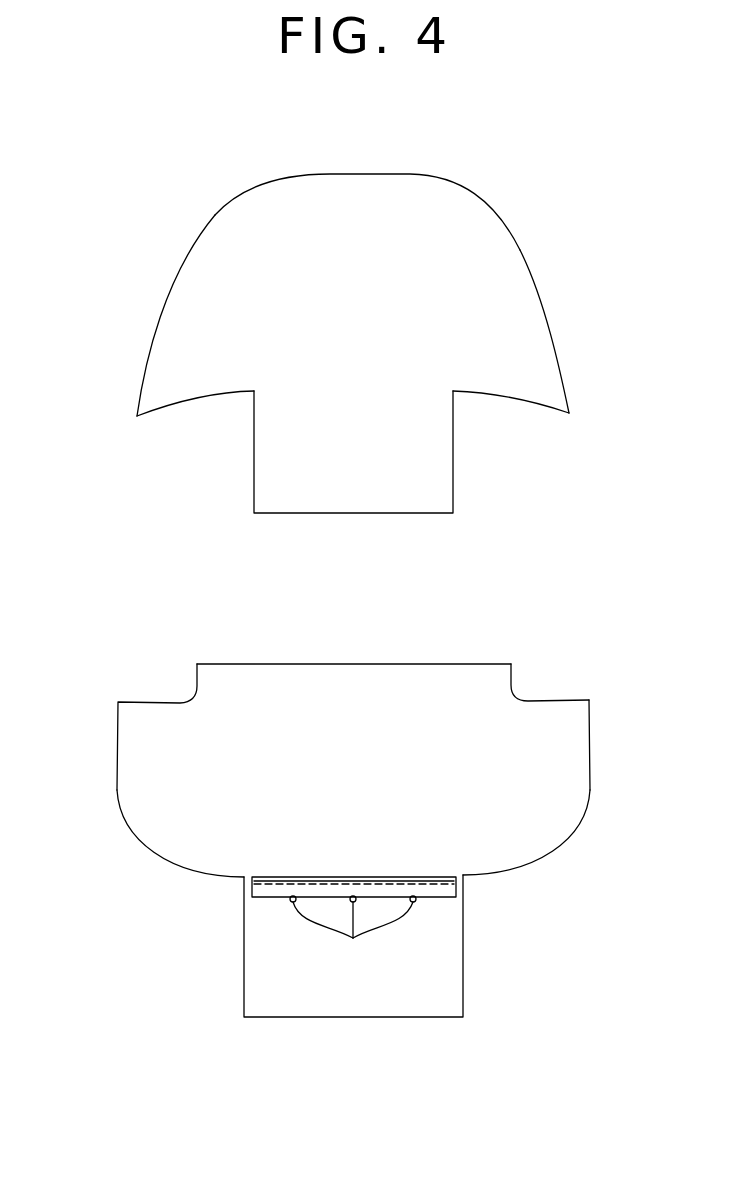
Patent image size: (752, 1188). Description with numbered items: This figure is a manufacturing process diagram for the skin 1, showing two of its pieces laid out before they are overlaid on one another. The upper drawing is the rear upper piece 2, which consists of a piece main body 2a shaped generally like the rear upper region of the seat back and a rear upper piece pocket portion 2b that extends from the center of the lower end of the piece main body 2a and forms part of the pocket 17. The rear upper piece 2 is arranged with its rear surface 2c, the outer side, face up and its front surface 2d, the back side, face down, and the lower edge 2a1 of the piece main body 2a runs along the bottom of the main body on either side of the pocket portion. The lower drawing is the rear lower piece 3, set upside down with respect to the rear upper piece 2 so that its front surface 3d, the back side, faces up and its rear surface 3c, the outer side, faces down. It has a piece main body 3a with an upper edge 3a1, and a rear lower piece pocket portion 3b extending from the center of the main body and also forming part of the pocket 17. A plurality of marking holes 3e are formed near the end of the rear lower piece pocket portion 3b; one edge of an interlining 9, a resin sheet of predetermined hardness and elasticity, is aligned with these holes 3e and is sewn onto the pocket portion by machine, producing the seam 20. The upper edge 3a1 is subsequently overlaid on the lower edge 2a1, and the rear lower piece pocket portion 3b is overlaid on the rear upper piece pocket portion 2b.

The skin 1 is at (343, 523).
The rear upper piece 2 is at (160, 247).
The piece main body 2a is at (275, 178).
The lower edge 2a1 is at (197, 395).
The rear upper piece pocket portion 2b is at (458, 470).
The rear surface 2c is at (475, 257).
The front surface 2d is at (515, 270).
The rear lower piece 3 is at (120, 642).
The piece main body 3a is at (115, 745).
The upper edge 3a1 is at (180, 850).
The rear lower piece pocket portion 3b is at (243, 952).
The rear surface 3c is at (555, 730).
The front surface 3d is at (490, 722).
The marking holes 3e is at (353, 932).
The interlining 9 is at (368, 890).
The pocket 17 is at (369, 704).
The seam 20 is at (330, 883).